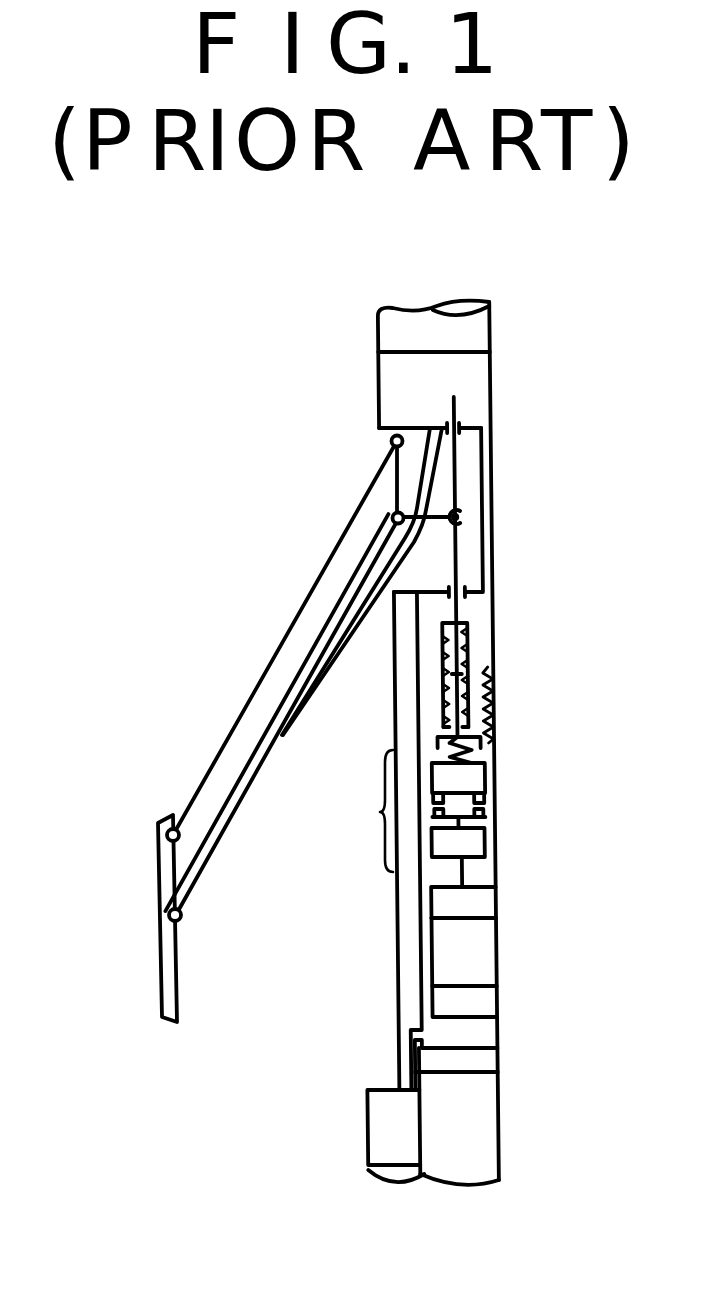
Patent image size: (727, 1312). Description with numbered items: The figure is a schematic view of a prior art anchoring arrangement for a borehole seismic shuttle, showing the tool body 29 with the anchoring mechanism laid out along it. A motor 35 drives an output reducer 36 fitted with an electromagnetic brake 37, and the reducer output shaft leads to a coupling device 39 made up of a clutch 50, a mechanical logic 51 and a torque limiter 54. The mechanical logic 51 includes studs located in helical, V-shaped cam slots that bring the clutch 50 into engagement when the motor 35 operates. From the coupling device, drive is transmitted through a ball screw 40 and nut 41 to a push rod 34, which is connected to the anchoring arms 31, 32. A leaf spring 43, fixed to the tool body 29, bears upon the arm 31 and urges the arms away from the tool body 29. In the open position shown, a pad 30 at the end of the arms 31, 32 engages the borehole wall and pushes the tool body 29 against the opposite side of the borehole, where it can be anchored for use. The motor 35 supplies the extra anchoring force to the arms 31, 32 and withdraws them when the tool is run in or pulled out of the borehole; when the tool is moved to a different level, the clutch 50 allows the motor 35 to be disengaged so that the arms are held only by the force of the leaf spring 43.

The tool body 29 is at (400, 393).
The pad 30 is at (165, 890).
The anchoring arm 31 is at (227, 828).
The anchoring arm 32 is at (233, 727).
The push rod 34 is at (457, 612).
The motor 35 is at (485, 958).
The output reducer 36 is at (447, 905).
The electromagnetic brake 37 is at (487, 1002).
The coupling device 39 is at (357, 811).
The ball screw 40 is at (445, 722).
The nut 41 is at (470, 650).
The leaf spring 43 is at (398, 570).
The clutch 50 is at (481, 813).
The mechanical logic 51 is at (445, 847).
The torque limiter 54 is at (487, 784).